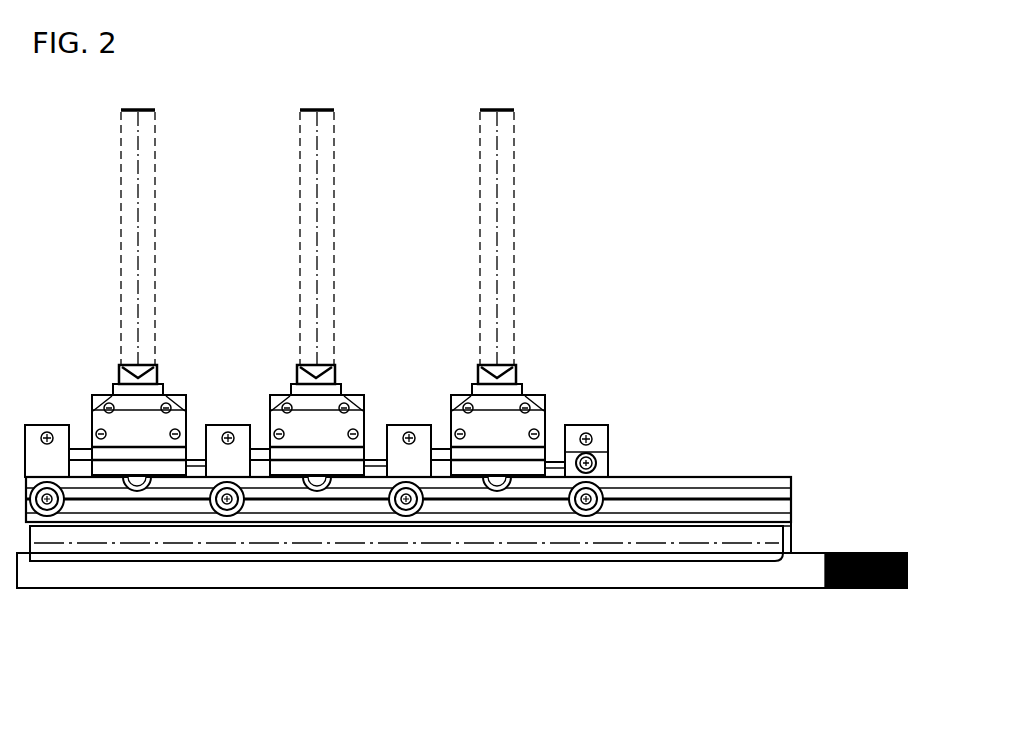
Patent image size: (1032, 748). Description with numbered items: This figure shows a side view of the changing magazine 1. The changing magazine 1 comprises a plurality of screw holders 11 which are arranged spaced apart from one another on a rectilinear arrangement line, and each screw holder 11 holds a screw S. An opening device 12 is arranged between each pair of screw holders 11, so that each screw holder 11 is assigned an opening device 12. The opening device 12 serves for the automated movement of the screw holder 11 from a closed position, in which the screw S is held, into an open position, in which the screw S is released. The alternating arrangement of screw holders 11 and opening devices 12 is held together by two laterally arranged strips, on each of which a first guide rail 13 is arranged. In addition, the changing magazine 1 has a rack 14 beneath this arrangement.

The changing magazine 1 is at (790, 440).
The screw holder 11 is at (152, 398).
The opening device 12 is at (33, 432).
The first guide rail 13 is at (772, 537).
The rack 14 is at (800, 580).
The screw S is at (150, 168).